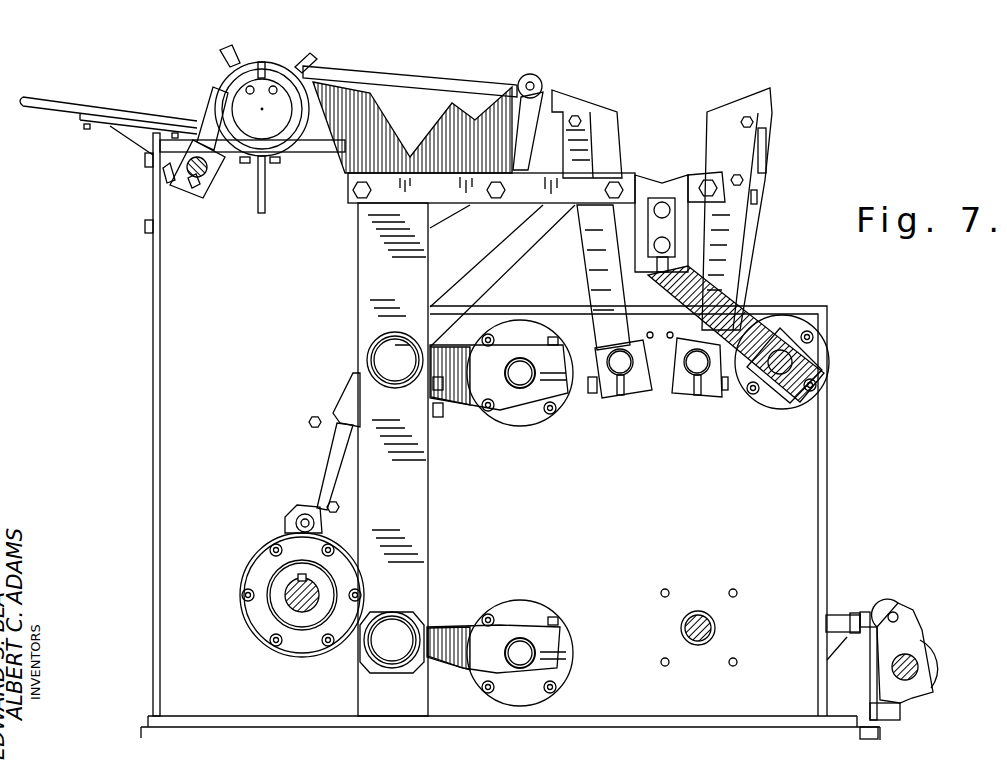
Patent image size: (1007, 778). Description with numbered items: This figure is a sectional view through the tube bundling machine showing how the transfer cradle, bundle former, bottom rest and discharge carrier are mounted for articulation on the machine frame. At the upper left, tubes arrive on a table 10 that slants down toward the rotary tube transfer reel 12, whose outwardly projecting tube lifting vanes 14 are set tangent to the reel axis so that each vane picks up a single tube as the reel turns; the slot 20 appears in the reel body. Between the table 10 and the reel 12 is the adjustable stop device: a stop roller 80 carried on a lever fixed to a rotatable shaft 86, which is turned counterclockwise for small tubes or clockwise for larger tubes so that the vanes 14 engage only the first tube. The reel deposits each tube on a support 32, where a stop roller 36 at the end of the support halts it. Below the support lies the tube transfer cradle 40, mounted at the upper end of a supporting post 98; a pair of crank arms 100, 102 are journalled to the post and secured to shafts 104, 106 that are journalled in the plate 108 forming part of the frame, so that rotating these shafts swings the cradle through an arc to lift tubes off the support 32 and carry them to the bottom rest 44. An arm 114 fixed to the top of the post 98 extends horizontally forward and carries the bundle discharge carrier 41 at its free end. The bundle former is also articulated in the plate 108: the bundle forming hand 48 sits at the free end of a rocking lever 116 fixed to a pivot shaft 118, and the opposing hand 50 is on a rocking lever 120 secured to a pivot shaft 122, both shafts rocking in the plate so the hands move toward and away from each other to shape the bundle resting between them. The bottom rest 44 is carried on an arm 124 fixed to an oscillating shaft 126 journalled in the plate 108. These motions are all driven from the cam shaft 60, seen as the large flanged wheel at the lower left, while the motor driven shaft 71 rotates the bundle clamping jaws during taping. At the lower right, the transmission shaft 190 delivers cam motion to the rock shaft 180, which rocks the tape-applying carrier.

The table 10 is at (40, 103).
The rotary tube transfer reel 12 is at (254, 62).
The tube lifting vanes 14 is at (306, 55).
The roller slot 20 is at (264, 62).
The support 32 is at (385, 78).
The stop roller 36 is at (540, 74).
The tube transfer cradle 40 is at (452, 126).
The bundle discharge carrier 41 is at (696, 176).
The bottom rest 44 is at (648, 174).
The bundle forming hand 48 is at (580, 98).
The bundle forming hand 50 is at (744, 96).
The cam shaft 60 is at (292, 602).
The motor driven shaft 71 is at (698, 612).
The stop roller 80 is at (210, 92).
The rotatable shaft 86 is at (209, 194).
The supporting post 98 is at (360, 260).
The crank arm 100 is at (453, 374).
The crank arm 102 is at (451, 630).
The shaft 104 is at (521, 380).
The shaft 106 is at (522, 642).
The plate 108 is at (632, 528).
The arm 114 is at (470, 196).
The rocking lever 116 is at (592, 266).
The pivot shaft 118 is at (618, 368).
The rocking lever 120 is at (732, 258).
The pivot shaft 122 is at (694, 368).
The arm 124 is at (740, 312).
The oscillating shaft 126 is at (778, 370).
The rock shaft 180 is at (920, 656).
The transmission shaft 190 is at (833, 620).